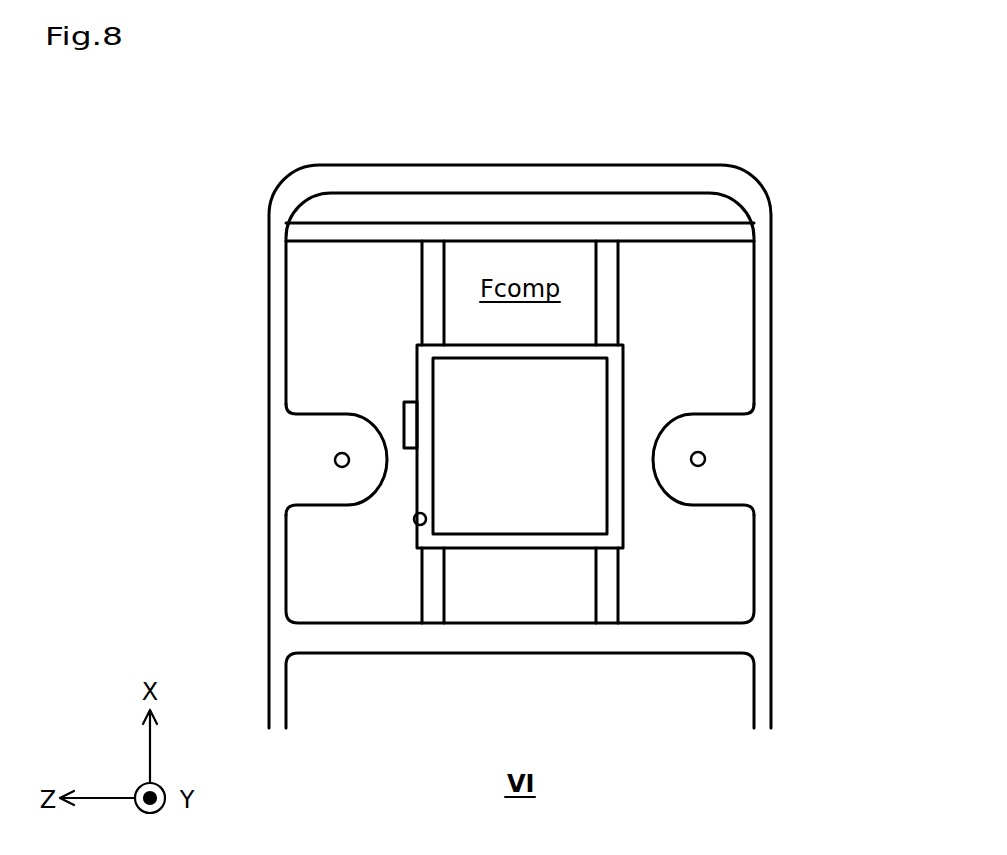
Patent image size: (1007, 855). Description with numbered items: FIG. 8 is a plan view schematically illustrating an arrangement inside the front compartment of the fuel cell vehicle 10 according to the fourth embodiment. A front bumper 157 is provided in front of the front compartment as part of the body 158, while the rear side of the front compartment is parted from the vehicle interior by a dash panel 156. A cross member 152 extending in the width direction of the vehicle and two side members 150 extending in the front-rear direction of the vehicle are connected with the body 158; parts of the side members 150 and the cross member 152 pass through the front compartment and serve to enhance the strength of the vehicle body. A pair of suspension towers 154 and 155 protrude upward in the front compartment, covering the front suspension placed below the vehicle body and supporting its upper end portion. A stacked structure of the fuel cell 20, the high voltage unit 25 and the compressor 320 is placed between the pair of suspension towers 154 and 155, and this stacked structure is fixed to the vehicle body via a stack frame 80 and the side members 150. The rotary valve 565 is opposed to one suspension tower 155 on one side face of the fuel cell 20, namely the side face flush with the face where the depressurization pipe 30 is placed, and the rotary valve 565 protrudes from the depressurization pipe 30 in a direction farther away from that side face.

The fuel cell vehicle 10 is at (520, 397).
The front bumper 157 is at (705, 175).
The body 158 is at (277, 257).
The cross member 152 is at (742, 235).
The suspension tower 155 is at (347, 442).
The suspension tower 154 is at (715, 483).
The dash panel 156 is at (725, 643).
The side member 150 is at (430, 597).
The stack frame 80 is at (613, 387).
The fuel cell 20 is at (519, 558).
The high voltage unit 25 is at (519, 558).
The compressor 320 is at (530, 508).
The rotary valve 565 is at (412, 402).
The depressurization pipe 30 is at (414, 519).